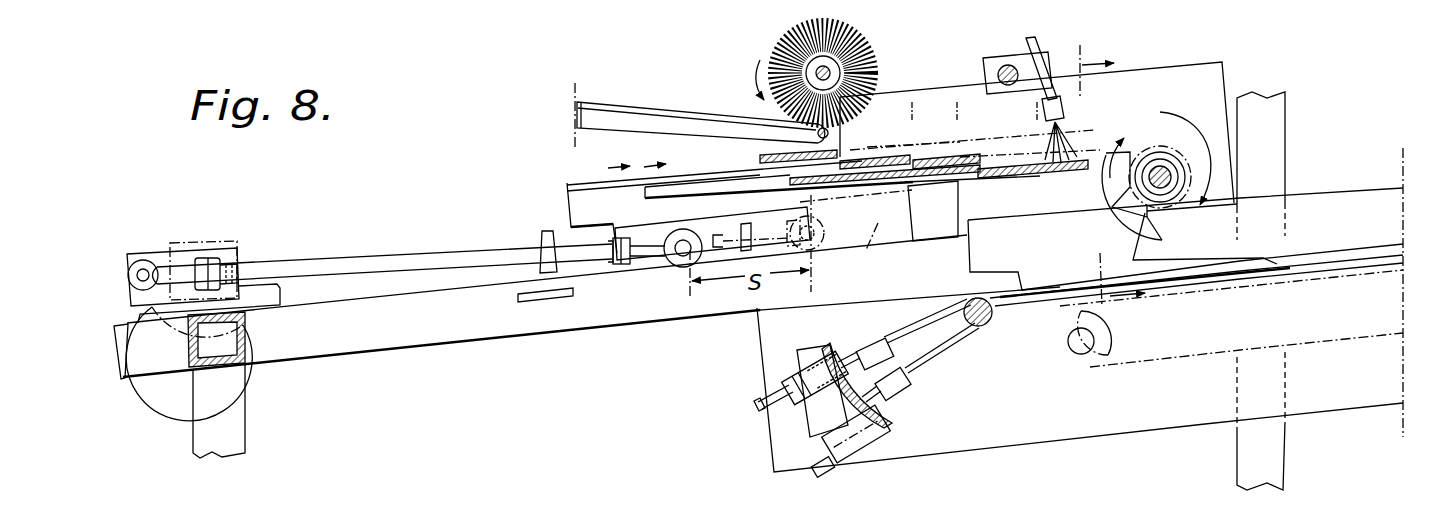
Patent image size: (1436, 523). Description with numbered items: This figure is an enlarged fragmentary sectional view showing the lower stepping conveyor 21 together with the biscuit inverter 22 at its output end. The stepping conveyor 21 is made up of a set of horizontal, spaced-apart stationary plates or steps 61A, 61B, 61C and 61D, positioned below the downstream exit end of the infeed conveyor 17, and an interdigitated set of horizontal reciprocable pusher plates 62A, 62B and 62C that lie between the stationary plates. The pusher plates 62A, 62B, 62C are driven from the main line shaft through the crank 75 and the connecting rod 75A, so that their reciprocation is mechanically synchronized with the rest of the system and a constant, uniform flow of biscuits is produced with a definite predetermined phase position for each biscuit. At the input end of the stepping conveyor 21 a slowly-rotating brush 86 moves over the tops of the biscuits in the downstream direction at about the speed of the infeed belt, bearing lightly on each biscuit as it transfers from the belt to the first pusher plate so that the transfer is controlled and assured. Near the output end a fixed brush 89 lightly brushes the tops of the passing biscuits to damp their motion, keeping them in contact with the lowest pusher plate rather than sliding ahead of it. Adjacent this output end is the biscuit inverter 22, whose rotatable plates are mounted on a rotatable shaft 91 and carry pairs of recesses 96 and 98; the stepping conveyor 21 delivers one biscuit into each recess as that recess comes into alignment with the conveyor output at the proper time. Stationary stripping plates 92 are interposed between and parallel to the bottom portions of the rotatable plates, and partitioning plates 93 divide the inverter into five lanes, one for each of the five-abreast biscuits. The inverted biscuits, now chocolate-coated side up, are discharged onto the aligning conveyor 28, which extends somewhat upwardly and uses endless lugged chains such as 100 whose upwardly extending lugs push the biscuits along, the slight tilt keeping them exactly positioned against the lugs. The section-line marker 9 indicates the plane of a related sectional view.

The crank 75 is at (157, 255).
The connecting rod 75A is at (363, 264).
The conveyor 17 is at (593, 101).
The slowly-rotating brush 86 is at (870, 64).
The lower stepping conveyor 21 is at (567, 192).
The reciprocable pusher plate 62A is at (676, 176).
The reciprocable pusher plate 62B is at (705, 191).
The reciprocable pusher plate 62C is at (838, 190).
The stationary plate 61A is at (764, 155).
The stationary plate 61B is at (877, 158).
The stationary plate 61C is at (961, 156).
The stationary plate 61D is at (1038, 164).
The fixed brush 89 is at (1064, 112).
The partitioning plate 93 is at (1131, 80).
The biscuit inverter 22 is at (1182, 112).
The recess 96 is at (1158, 114).
The rotatable shaft 91 is at (1125, 186).
The recess 98 is at (1163, 240).
The stationary stripping plate 92 is at (969, 260).
The endless lugged chain 100 is at (1183, 300).
The aligning conveyor 28 is at (1079, 428).
The section line 9 is at (1099, 183).